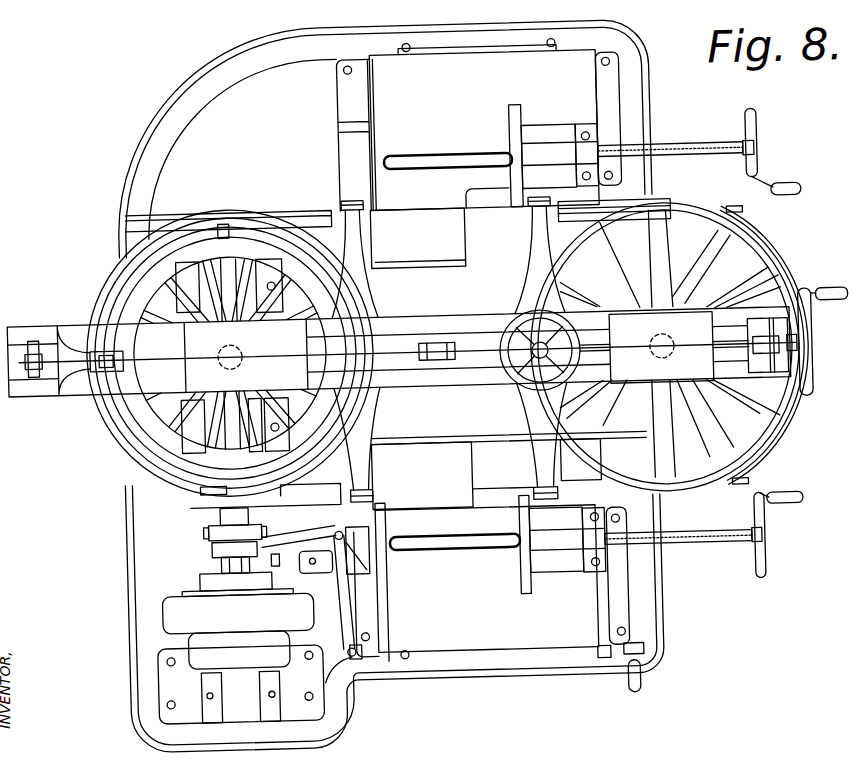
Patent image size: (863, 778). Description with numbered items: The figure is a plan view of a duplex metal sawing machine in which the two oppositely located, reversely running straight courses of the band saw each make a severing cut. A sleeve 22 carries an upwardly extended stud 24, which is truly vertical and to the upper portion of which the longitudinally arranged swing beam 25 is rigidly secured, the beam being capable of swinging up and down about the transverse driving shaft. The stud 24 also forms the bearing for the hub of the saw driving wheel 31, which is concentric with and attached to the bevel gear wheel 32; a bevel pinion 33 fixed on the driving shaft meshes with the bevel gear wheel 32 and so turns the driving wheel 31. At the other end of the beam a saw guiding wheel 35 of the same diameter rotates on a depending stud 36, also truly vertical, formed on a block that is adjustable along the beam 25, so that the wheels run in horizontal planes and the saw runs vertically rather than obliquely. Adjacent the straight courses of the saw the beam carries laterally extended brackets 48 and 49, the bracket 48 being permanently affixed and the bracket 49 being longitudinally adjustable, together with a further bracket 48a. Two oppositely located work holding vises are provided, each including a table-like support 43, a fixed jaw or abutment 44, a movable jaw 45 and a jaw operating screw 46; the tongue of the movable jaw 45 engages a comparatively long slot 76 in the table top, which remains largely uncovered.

The sleeve 22 is at (263, 286).
The stud 24 is at (230, 355).
The swing beam 25 is at (452, 318).
The saw driving wheel 31 is at (150, 241).
The bevel gear wheel 32 is at (162, 440).
The bevel gear pinion 33 is at (205, 495).
The saw guiding wheel 35 is at (695, 480).
The depending stud 36 is at (666, 358).
The table-like support 43 is at (487, 345).
The fixed jaw or abutment 44 is at (382, 141).
The movable jaw 45 is at (496, 350).
The jaw operating screw 46 is at (702, 344).
The bracket 48 is at (358, 444).
The upper standard 48a is at (447, 256).
The bracket 49 is at (543, 440).
The slot 76 is at (458, 532).